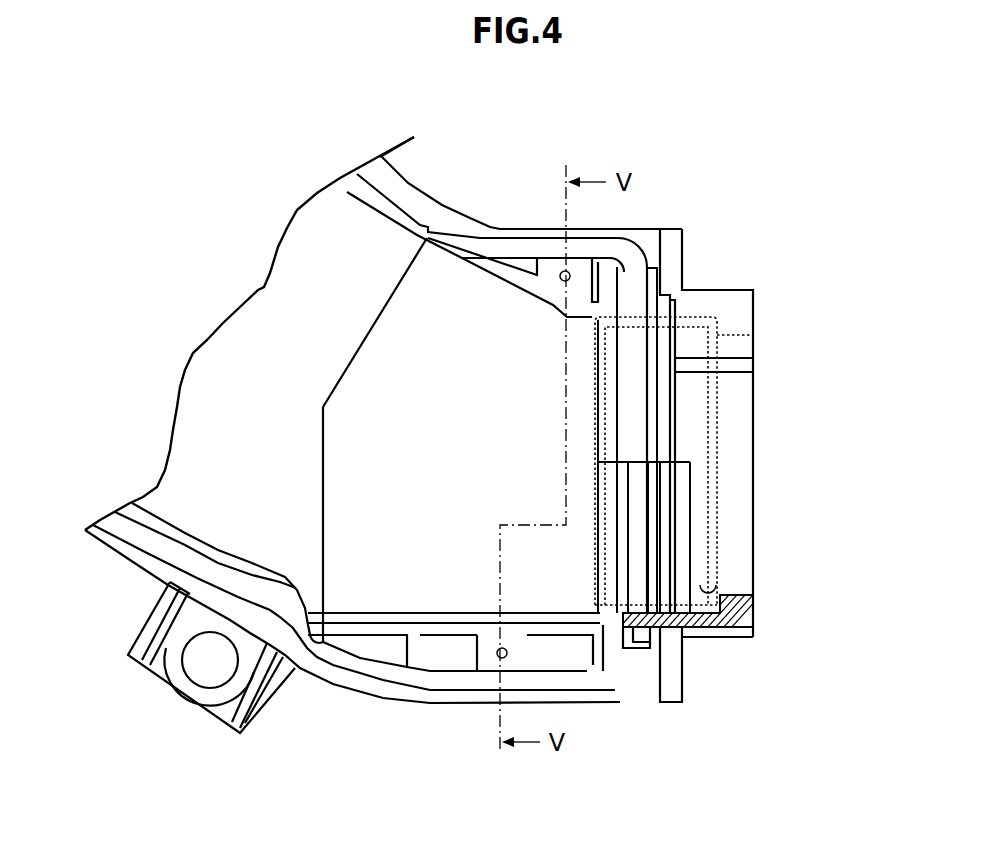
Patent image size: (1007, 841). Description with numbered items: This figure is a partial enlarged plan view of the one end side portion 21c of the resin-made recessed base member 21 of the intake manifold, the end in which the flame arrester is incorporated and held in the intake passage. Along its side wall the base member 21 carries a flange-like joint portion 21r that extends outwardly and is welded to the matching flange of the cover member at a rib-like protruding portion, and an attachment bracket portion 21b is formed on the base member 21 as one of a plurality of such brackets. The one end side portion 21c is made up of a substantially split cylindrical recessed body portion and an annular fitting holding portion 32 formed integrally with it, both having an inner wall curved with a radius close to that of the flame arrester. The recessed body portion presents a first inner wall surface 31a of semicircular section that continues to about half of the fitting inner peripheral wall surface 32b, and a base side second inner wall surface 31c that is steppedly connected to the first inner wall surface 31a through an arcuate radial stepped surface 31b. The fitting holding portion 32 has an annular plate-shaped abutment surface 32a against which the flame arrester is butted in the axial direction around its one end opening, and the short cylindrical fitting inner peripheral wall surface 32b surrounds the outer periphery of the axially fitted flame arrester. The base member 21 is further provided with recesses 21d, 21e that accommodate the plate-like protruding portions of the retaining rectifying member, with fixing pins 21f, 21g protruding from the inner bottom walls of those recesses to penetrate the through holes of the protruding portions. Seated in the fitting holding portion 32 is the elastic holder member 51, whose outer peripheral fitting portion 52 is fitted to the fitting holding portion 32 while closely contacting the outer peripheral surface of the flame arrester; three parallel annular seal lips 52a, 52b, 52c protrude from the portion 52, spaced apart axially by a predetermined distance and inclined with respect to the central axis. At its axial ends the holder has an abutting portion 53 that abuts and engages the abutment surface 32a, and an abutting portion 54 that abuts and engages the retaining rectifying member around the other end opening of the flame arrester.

The base member 21 is at (419, 470).
The flange-like joint portion 21r is at (408, 150).
The attachment bracket portion 21b is at (190, 683).
The one end side portion 21c is at (726, 297).
The recess 21d is at (527, 272).
The recess 21e is at (443, 678).
The fixing pin 21f is at (560, 270).
The fixing pin 21g is at (498, 660).
The first inner wall surface 31a is at (380, 494).
The arcuate radial stepped surface 31b is at (383, 318).
The base side second inner wall surface 31c is at (362, 192).
The fitting holding portion 32 is at (656, 622).
The abutment surface 32a is at (712, 585).
The fitting inner peripheral wall surface 32b is at (630, 612).
The elastic holder member 51 is at (730, 492).
The outer peripheral fitting portion 52 is at (700, 520).
The annular seal lip 52a is at (690, 466).
The annular seal lip 52b is at (655, 492).
The annular seal lip 52c is at (630, 522).
The abutting portion on one side 53 is at (712, 410).
The abutting portion on the other side 54 is at (598, 412).